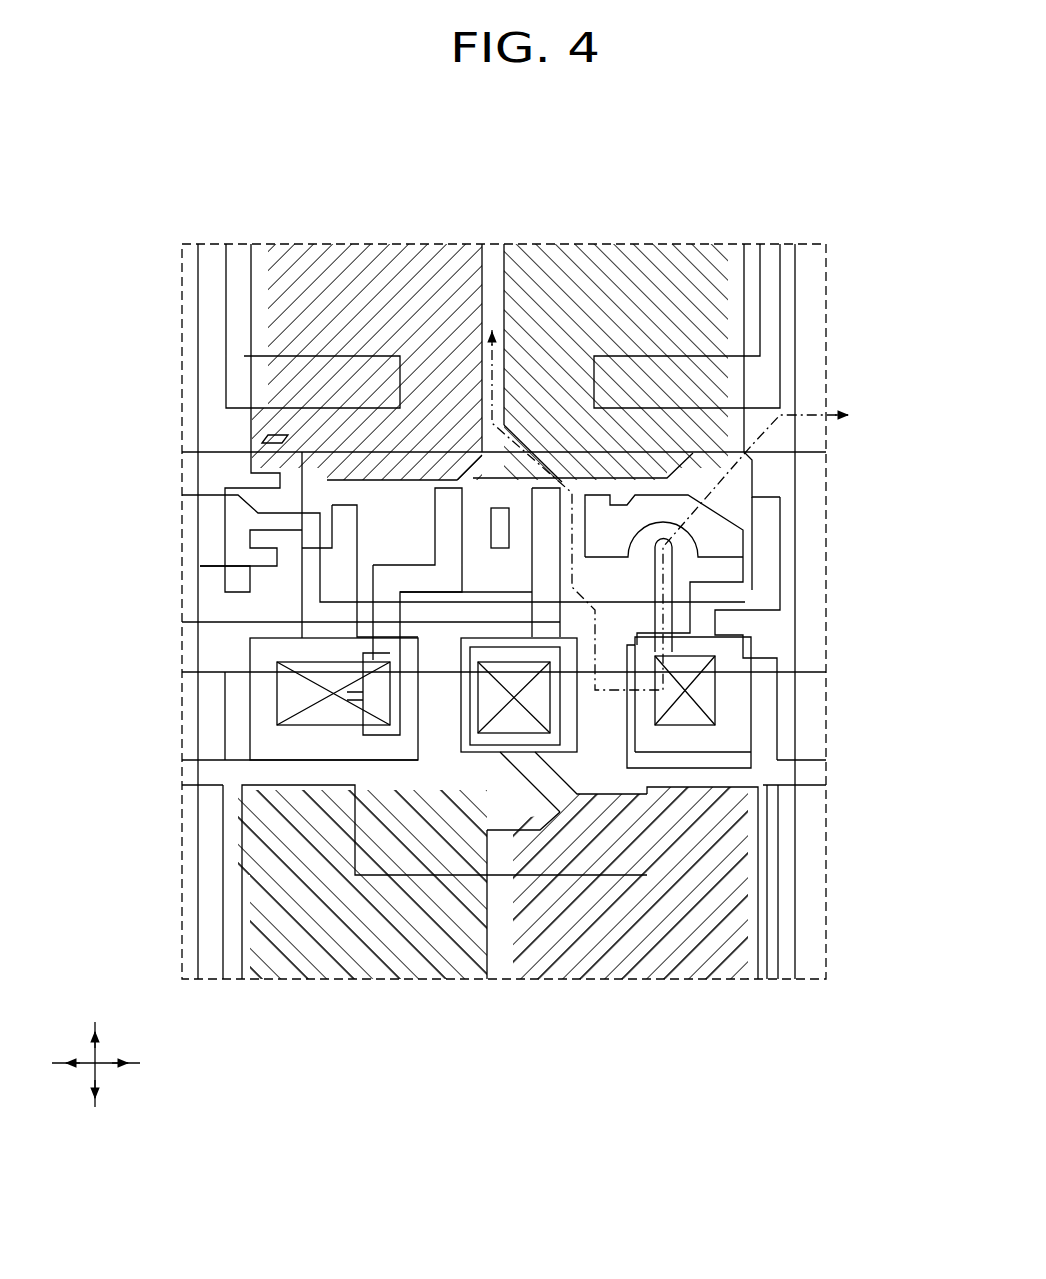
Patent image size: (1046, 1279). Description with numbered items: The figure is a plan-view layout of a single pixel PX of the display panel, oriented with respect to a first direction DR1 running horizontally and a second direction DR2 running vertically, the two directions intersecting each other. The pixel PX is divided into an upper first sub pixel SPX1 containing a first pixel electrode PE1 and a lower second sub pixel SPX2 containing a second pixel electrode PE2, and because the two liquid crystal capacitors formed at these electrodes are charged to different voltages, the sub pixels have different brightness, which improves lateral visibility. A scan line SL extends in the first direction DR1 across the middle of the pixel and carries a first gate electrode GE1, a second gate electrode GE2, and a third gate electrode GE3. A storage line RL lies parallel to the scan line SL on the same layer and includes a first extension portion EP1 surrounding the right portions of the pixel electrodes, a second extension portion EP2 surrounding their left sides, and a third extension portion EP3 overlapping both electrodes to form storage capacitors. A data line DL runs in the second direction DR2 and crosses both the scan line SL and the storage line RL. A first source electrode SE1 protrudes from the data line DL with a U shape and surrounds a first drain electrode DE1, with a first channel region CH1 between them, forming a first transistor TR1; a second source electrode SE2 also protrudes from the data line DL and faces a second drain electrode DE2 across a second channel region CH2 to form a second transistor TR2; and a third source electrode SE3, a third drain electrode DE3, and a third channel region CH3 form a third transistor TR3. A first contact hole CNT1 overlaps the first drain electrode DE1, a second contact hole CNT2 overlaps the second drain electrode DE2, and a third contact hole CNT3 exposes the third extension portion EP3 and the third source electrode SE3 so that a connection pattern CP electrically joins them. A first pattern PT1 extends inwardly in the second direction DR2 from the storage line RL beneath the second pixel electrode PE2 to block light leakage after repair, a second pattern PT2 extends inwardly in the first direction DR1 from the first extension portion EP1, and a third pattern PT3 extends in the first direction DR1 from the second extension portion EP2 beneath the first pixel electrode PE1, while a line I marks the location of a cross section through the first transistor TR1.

The pixel PX is at (845, 228).
The first sub pixel SPX1 is at (178, 343).
The second sub pixel SPX2 is at (178, 858).
The first pixel electrode PE1 is at (494, 243).
The second pixel electrode PE2 is at (494, 982).
The first extension portion EP1 is at (780, 278).
The second extension portion EP2 is at (227, 280).
The third extension portion EP3 is at (223, 685).
The first pattern PT1 is at (603, 877).
The second pattern PT2 is at (745, 438).
The third pattern PT3 is at (285, 435).
The scan line SL is at (190, 456).
The data line DL is at (808, 982).
The storage line RL is at (190, 764).
The connection pattern CP is at (248, 657).
The first transistor TR1 is at (774, 573).
The second transistor TR2 is at (767, 628).
The third transistor TR3 is at (300, 593).
The first source electrode SE1 is at (750, 505).
The first channel region CH1 is at (700, 535).
The first gate electrode GE1 is at (752, 568).
The first drain electrode DE1 is at (828, 602).
The second source electrode SE2 is at (700, 642).
The second channel region CH2 is at (572, 556).
The second gate electrode GE2 is at (603, 558).
The second drain electrode DE2 is at (745, 720).
The third source electrode SE3 is at (373, 592).
The third channel region CH3 is at (475, 535).
The third gate electrode GE3 is at (490, 605).
The third drain electrode DE3 is at (530, 548).
The first contact hole CNT1 is at (688, 727).
The second contact hole CNT2 is at (600, 780).
The third contact hole CNT3 is at (313, 726).
The section line I-I' I is at (674, 497).
The first direction DR1 is at (117, 1064).
The second direction DR2 is at (95, 1080).